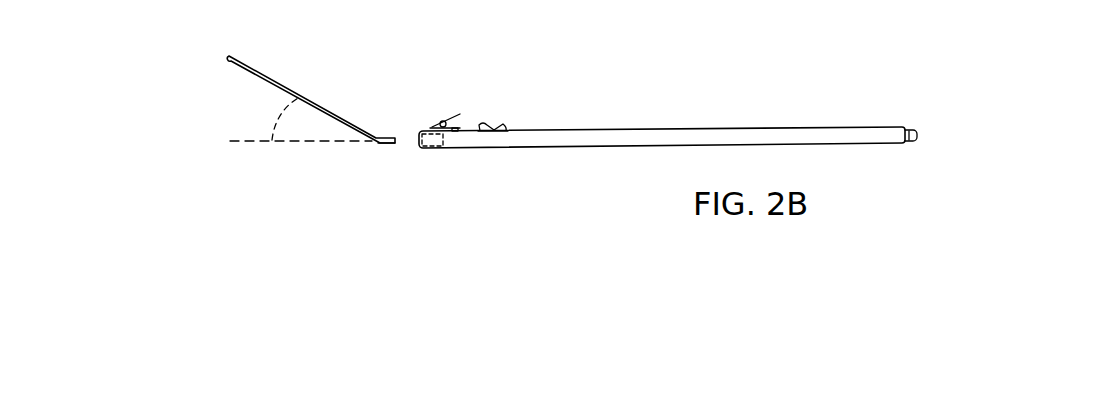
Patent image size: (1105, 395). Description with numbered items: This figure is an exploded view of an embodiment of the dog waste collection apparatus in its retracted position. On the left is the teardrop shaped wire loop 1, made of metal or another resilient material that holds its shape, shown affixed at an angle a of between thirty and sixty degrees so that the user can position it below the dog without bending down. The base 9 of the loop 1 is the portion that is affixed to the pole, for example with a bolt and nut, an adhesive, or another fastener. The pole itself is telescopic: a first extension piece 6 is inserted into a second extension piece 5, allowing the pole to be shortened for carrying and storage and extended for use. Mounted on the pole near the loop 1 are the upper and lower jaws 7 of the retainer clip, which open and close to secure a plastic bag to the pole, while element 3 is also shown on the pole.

The teardrop shaped wire loop 1 is at (315, 102).
The angle a is at (301, 118).
The base 9 is at (387, 143).
The second extension piece 5 is at (662, 108).
The first extension piece 6 is at (917, 132).
The upper and lower jaws 7 is at (455, 115).
The hook element 3 is at (492, 130).